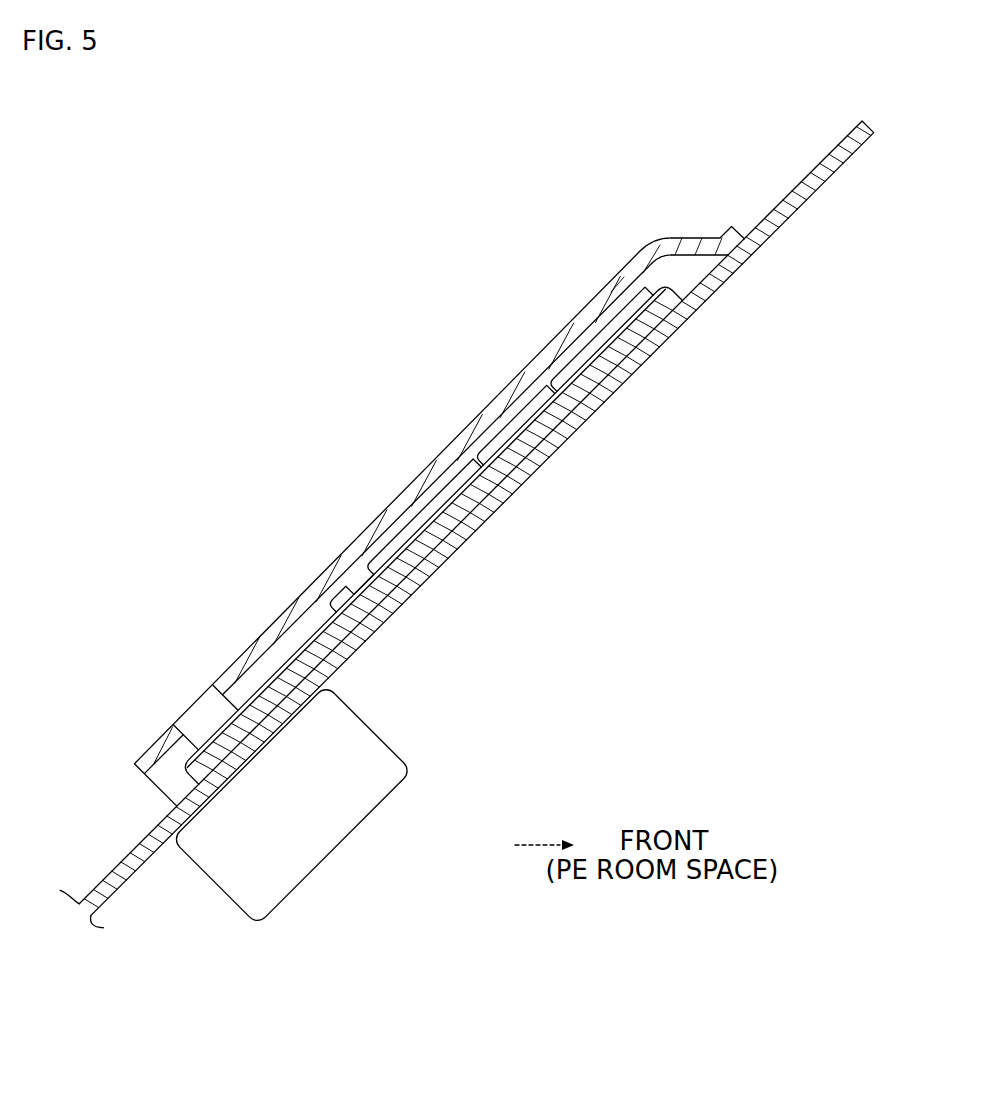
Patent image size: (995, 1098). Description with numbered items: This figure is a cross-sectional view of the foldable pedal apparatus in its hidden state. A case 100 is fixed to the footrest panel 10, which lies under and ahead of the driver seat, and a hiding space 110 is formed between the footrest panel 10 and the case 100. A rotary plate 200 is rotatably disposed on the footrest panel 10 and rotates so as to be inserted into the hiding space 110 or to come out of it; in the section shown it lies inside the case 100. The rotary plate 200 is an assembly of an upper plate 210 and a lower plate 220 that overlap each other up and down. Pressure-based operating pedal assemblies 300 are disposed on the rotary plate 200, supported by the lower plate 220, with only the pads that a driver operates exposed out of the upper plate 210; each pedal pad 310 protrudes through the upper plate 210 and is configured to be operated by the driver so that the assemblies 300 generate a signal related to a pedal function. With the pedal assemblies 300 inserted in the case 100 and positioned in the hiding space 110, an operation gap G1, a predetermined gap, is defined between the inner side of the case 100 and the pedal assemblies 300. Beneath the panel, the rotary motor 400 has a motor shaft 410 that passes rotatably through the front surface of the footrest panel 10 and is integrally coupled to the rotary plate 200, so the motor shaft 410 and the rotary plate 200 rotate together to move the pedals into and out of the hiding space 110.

The footrest panel 10 is at (776, 247).
The case 100 is at (262, 632).
The hiding space 110 is at (613, 329).
The rotary plate 200 is at (703, 533).
The upper plate 210 is at (638, 323).
The lower plate 220 is at (572, 410).
The pressure-based operating pedal assemblies 300 is at (538, 376).
The pedal pad 310 is at (422, 523).
The rotary motor 400 is at (300, 853).
The motor shaft 410 is at (200, 715).
The operation gap G1 is at (352, 591).